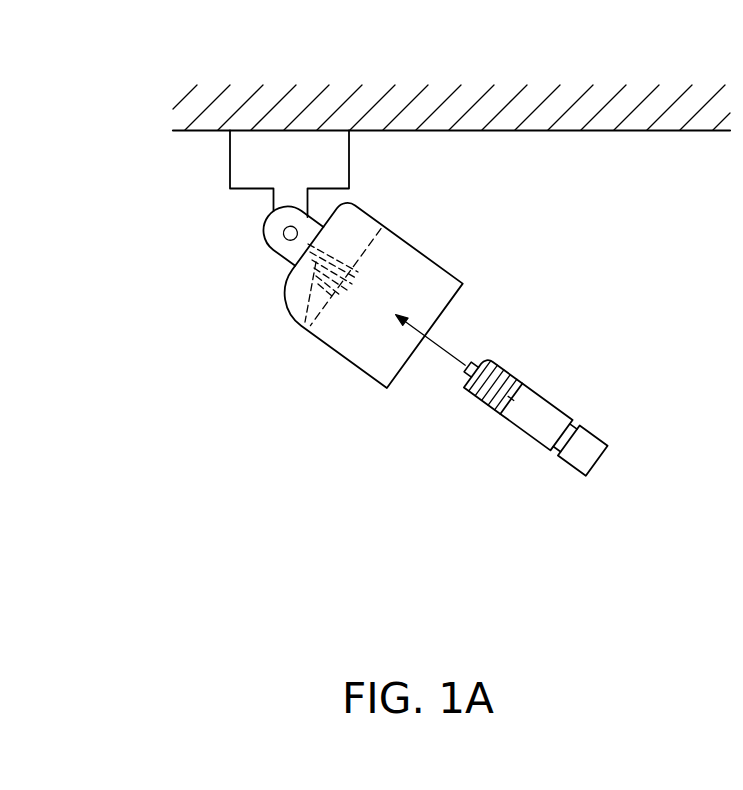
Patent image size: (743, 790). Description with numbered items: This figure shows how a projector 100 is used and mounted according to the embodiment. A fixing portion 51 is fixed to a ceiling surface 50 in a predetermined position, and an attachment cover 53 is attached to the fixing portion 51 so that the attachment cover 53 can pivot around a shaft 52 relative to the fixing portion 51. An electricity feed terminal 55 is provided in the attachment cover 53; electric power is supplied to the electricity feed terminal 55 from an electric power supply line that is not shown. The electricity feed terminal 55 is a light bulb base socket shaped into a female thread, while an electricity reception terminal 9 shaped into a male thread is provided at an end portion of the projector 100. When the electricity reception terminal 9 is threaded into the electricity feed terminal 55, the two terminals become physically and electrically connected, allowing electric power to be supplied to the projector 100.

The ceiling surface 50 is at (465, 131).
The fixing portion 51 is at (230, 153).
The shaft 52 is at (283, 234).
The attachment cover 53 is at (418, 249).
The electricity feed terminal 55 is at (305, 323).
The electricity reception terminal 9 is at (494, 358).
The projector 100 is at (556, 404).